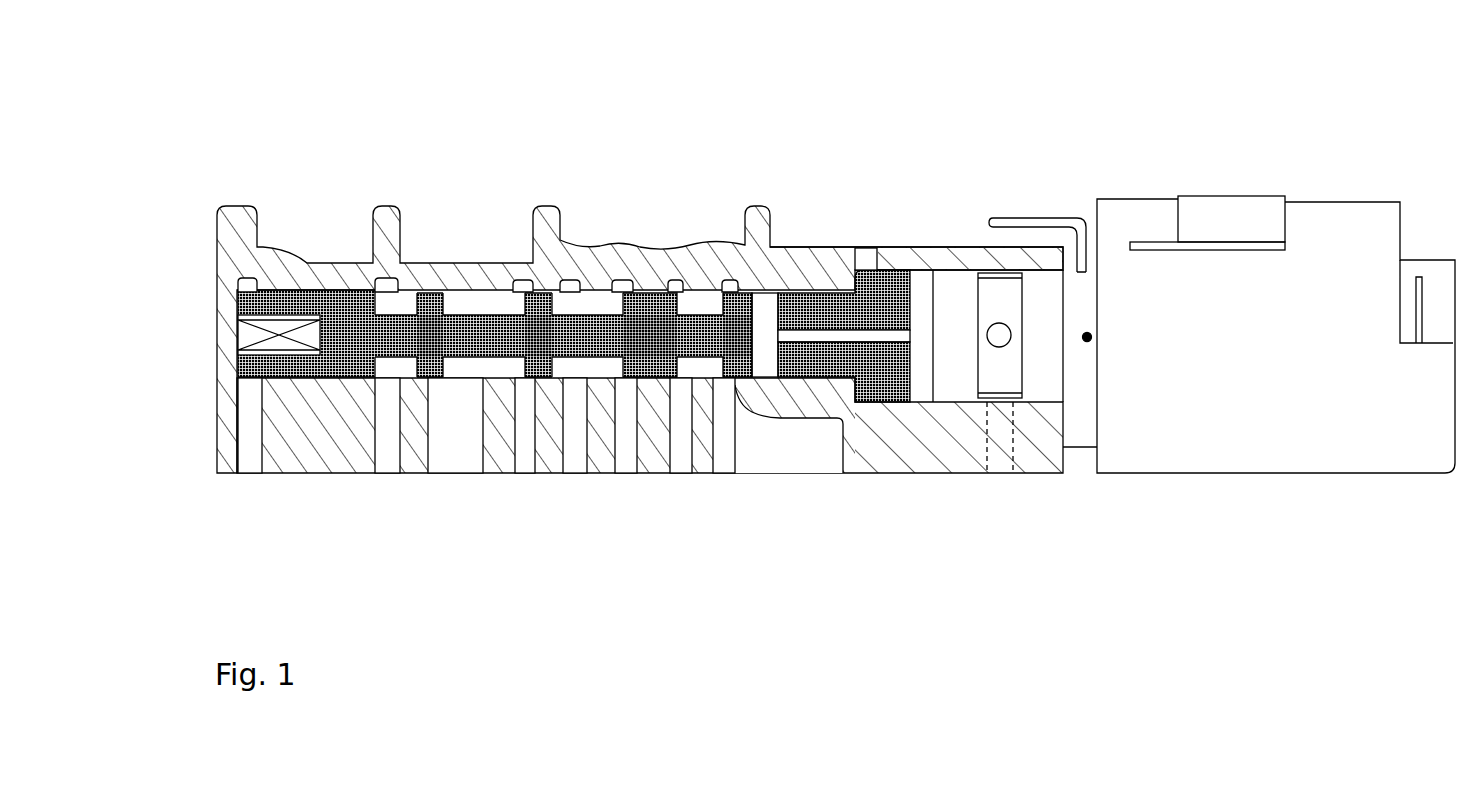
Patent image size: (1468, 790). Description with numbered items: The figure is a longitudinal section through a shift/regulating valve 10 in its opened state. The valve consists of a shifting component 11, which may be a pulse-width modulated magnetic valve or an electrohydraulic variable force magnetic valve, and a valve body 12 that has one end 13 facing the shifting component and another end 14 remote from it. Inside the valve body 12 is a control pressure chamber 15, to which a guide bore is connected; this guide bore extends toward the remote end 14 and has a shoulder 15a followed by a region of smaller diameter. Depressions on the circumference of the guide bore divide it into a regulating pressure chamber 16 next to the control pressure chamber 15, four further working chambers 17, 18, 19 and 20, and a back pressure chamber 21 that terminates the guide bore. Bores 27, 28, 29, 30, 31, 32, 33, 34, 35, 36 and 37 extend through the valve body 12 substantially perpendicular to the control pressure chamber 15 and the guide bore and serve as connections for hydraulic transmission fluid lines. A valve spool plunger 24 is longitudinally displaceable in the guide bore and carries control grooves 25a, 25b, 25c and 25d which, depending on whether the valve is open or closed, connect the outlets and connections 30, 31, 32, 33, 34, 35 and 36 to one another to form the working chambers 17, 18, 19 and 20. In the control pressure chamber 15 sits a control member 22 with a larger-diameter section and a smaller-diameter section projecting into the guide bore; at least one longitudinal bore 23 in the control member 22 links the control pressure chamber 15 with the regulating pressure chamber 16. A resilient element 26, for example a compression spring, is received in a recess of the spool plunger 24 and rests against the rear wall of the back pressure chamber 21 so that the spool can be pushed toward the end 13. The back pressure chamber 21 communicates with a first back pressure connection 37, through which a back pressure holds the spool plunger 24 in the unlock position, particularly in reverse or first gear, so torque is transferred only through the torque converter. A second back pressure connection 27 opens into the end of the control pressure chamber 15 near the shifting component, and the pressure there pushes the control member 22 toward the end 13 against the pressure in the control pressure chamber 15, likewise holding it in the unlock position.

The shift/regulating valve 10 is at (1062, 153).
The shifting component 11 is at (1330, 258).
The valve body 12 is at (233, 233).
The end facing the shifting component 13 is at (1067, 323).
The end remote from the shifting component 14 is at (222, 393).
The control pressure chamber 15 is at (940, 298).
The shoulder 15a is at (855, 388).
The regulating pressure chamber 16 is at (767, 305).
The working chamber 17 is at (700, 307).
The working chamber 18 is at (505, 312).
The working chamber 19 is at (478, 303).
The working chamber 20 is at (385, 302).
The back pressure chamber 21 is at (245, 287).
The control member 22 is at (876, 298).
The longitudinal bore 23 is at (803, 337).
The valve spool plunger 24 is at (347, 333).
The control groove 25a is at (717, 315).
The control groove 25b is at (588, 303).
The control groove 25c is at (477, 300).
The control groove 25d is at (408, 310).
The resilient element 26 is at (252, 335).
The second back pressure connection 27 is at (862, 258).
The bore 28 is at (1087, 337).
The bore 29 is at (1000, 462).
The bore 30 is at (725, 460).
The bore 31 is at (682, 460).
The bore 32 is at (625, 460).
The bore 33 is at (575, 461).
The bore 34 is at (525, 460).
The bore 35 is at (455, 460).
The bore 36 is at (388, 460).
The first back pressure connection 37 is at (250, 460).